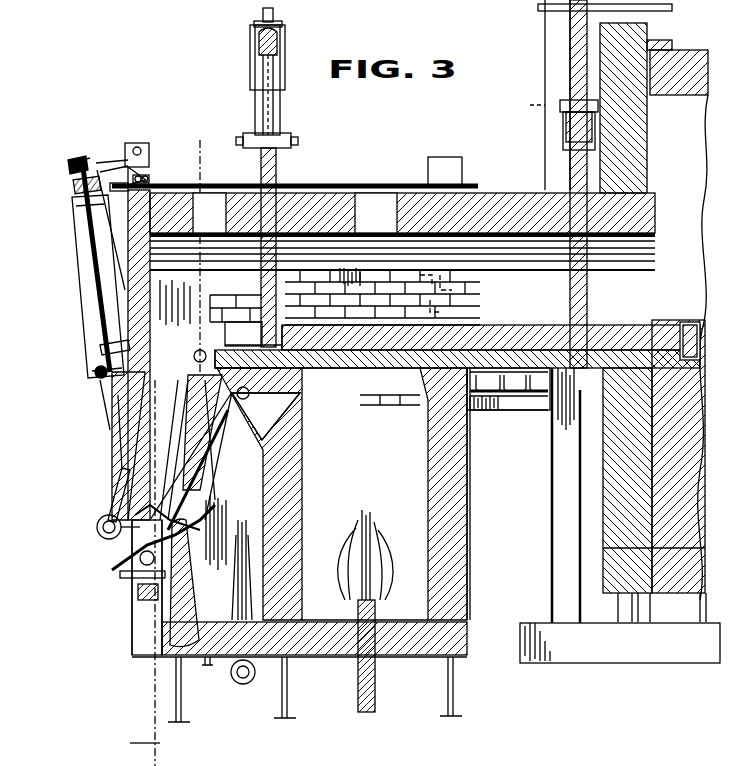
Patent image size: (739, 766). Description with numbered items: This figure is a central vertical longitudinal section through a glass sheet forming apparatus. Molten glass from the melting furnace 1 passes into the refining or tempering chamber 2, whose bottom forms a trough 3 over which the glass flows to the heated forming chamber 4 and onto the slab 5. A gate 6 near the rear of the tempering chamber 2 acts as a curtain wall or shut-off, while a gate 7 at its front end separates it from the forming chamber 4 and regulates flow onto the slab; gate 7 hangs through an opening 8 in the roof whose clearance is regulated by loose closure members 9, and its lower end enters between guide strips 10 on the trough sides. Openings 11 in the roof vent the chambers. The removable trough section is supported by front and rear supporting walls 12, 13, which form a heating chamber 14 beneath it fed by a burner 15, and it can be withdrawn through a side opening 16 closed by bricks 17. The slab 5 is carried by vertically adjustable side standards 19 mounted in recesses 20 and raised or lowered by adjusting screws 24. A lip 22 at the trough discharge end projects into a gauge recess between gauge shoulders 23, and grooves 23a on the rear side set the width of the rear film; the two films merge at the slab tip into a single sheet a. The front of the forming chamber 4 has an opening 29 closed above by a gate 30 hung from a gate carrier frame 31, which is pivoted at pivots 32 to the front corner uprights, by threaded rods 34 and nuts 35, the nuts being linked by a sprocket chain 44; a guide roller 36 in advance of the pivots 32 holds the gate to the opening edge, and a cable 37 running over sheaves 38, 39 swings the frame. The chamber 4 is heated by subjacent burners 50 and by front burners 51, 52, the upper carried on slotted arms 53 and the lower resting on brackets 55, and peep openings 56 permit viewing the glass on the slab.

The melting furnace 1 is at (654, 311).
The refining chamber 2 is at (402, 255).
The trough 3 is at (500, 325).
The forming chamber 4 is at (182, 300).
The slab 5 is at (210, 448).
The gate 6 is at (586, 270).
The gate 7 is at (258, 276).
The opening 8 is at (300, 192).
The closure members 9 is at (280, 190).
The guide strips 10 is at (290, 330).
The openings 11 is at (402, 213).
The front supporting wall 12 is at (290, 494).
The rear supporting wall 13 is at (428, 480).
The heating chamber 14 is at (378, 466).
The burner 15 is at (378, 688).
The opening 16 is at (325, 290).
The bricks 17 is at (425, 290).
The side standards 19 is at (224, 522).
The recesses 20 is at (232, 554).
The lip 22 is at (300, 410).
The gauge shoulders 23 is at (192, 382).
The grooves 23a is at (222, 476).
The adjusting screws 24 is at (208, 668).
The opening 29 is at (140, 630).
The gate 30 is at (118, 409).
The gate carrier frame 31 is at (76, 252).
The pivots 32 is at (352, 400).
The threaded rods 34 is at (94, 292).
The nuts 35 is at (74, 185).
The guide roller 36 is at (96, 370).
The cable 37 is at (112, 162).
The sheave 38 is at (150, 179).
The sheave 39 is at (150, 152).
The sprocket chain 44 is at (188, 572).
The subjacent burners 50 is at (243, 684).
The front burner 51 is at (97, 527).
The front burner 52 is at (148, 594).
The arms 53 is at (115, 492).
The brackets 55 is at (135, 580).
The peep openings 56 is at (243, 424).
The sheet a is at (116, 568).